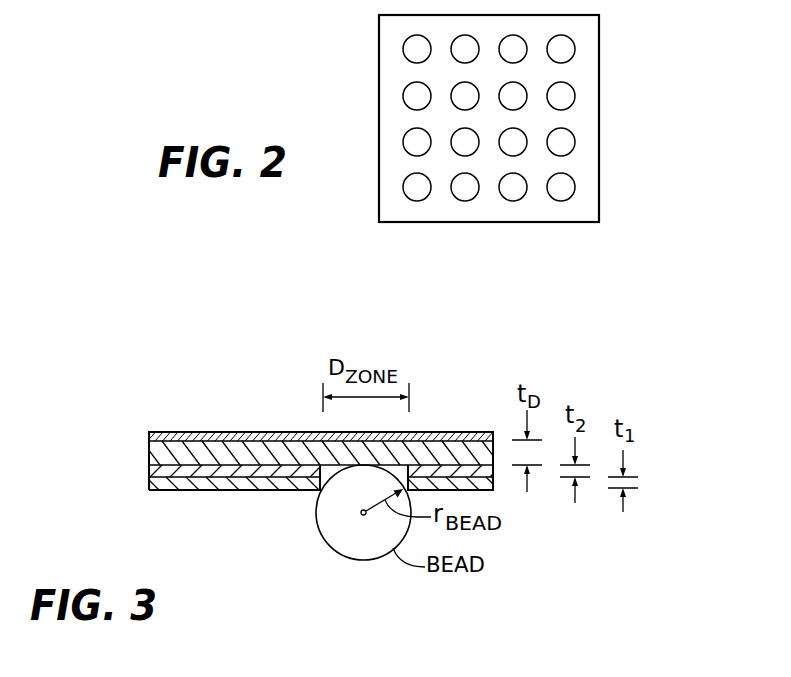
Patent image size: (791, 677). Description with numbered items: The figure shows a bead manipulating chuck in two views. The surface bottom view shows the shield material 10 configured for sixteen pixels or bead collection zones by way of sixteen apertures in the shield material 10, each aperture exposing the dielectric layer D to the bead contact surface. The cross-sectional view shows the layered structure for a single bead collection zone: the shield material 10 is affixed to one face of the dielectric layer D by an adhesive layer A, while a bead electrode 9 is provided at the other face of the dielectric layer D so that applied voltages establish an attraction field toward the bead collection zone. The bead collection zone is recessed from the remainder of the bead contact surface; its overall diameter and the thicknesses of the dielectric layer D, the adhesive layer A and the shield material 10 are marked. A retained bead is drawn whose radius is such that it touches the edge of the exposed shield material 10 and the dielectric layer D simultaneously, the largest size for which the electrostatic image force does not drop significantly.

In FIG. 3, the bead electrode 9 is at (206, 424).
In FIG. 2, the shield material 10 is at (590, 68).
In FIG. 3, the shield material 10 is at (218, 491).
In FIG. 2, the dielectric layer D is at (403, 92).
In FIG. 3, the dielectric layer D is at (157, 458).
In FIG. 3, the adhesive layer A is at (157, 472).